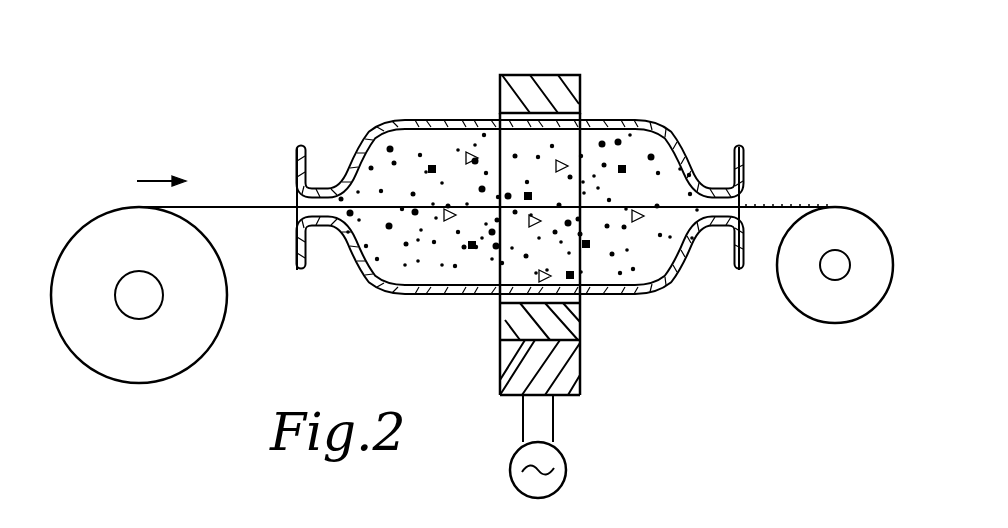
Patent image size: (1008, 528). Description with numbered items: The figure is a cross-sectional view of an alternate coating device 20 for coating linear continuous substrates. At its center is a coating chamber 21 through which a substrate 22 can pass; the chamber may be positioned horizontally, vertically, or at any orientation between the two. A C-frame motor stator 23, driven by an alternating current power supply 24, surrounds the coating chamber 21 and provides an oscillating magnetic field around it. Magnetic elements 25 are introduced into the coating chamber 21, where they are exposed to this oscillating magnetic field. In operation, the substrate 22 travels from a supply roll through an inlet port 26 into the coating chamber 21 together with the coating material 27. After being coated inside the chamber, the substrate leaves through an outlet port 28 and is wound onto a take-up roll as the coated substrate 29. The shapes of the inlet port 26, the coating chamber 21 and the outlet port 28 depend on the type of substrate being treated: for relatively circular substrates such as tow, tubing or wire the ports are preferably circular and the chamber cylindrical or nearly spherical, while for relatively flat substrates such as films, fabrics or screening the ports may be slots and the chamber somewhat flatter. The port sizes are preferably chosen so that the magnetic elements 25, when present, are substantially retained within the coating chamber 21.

The coating device 20 is at (678, 100).
The coating chamber 21 is at (475, 132).
The substrate 22 is at (265, 204).
The C-frame motor stator 23 is at (513, 326).
The alternating current power supply 24 is at (566, 470).
The magnetic elements 25 is at (470, 250).
The inlet port 26 is at (297, 220).
The coating material 27 is at (402, 175).
The outlet port 28 is at (742, 193).
The coated substrate 29 is at (773, 206).